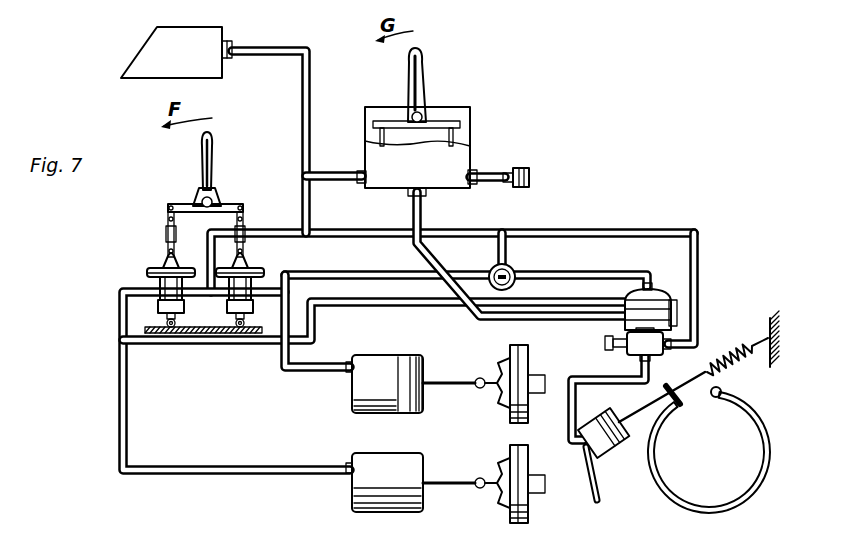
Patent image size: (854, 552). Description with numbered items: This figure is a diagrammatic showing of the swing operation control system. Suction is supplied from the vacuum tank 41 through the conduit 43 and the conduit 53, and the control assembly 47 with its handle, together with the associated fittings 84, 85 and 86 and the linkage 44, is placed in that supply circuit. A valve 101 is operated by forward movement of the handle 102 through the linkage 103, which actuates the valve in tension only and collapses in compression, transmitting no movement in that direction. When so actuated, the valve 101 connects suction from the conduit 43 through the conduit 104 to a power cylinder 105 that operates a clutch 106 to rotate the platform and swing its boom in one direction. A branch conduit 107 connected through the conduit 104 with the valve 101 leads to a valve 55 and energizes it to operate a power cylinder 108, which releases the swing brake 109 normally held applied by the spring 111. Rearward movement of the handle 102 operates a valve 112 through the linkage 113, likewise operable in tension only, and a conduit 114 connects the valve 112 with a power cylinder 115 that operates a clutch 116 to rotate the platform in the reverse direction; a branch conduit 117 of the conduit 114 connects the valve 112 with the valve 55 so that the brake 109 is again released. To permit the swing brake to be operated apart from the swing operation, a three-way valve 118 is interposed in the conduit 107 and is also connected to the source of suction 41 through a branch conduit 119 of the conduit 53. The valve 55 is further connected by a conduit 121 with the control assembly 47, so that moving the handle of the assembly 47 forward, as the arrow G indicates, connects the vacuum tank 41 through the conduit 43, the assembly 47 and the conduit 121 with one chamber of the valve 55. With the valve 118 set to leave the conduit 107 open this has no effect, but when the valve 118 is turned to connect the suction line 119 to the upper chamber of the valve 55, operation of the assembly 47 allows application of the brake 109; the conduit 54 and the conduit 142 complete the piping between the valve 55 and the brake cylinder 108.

The vacuum tank 41 is at (165, 41).
The conduit 43 is at (303, 128).
The lever linkage 44 is at (200, 191).
The control assembly 47 is at (478, 90).
The conduit 53 is at (460, 235).
The conduit 54 is at (697, 262).
The valve 55 is at (657, 290).
The outlet conduit 84 is at (496, 173).
The fitting 85 is at (523, 164).
The inlet conduit 86 is at (345, 163).
The valve 101 is at (250, 270).
The handle 102 is at (204, 151).
The linkage 103 is at (245, 215).
The conduit 104 is at (280, 300).
The power cylinder 105 is at (372, 384).
The clutch 106 is at (502, 360).
The branch conduit 107 is at (381, 270).
The power cylinder 108 is at (603, 455).
The swing brake 109 is at (648, 454).
The spring 111 is at (762, 342).
The valve 112 is at (159, 267).
The linkage 113 is at (167, 233).
The conduit 114 is at (121, 305).
The power cylinder 115 is at (372, 473).
The clutch 116 is at (502, 506).
The branch conduit 117 is at (179, 340).
The three-way valve 118 is at (516, 283).
The branch conduit 119 is at (508, 255).
The conduit 121 is at (412, 212).
The conduit 142 is at (597, 380).